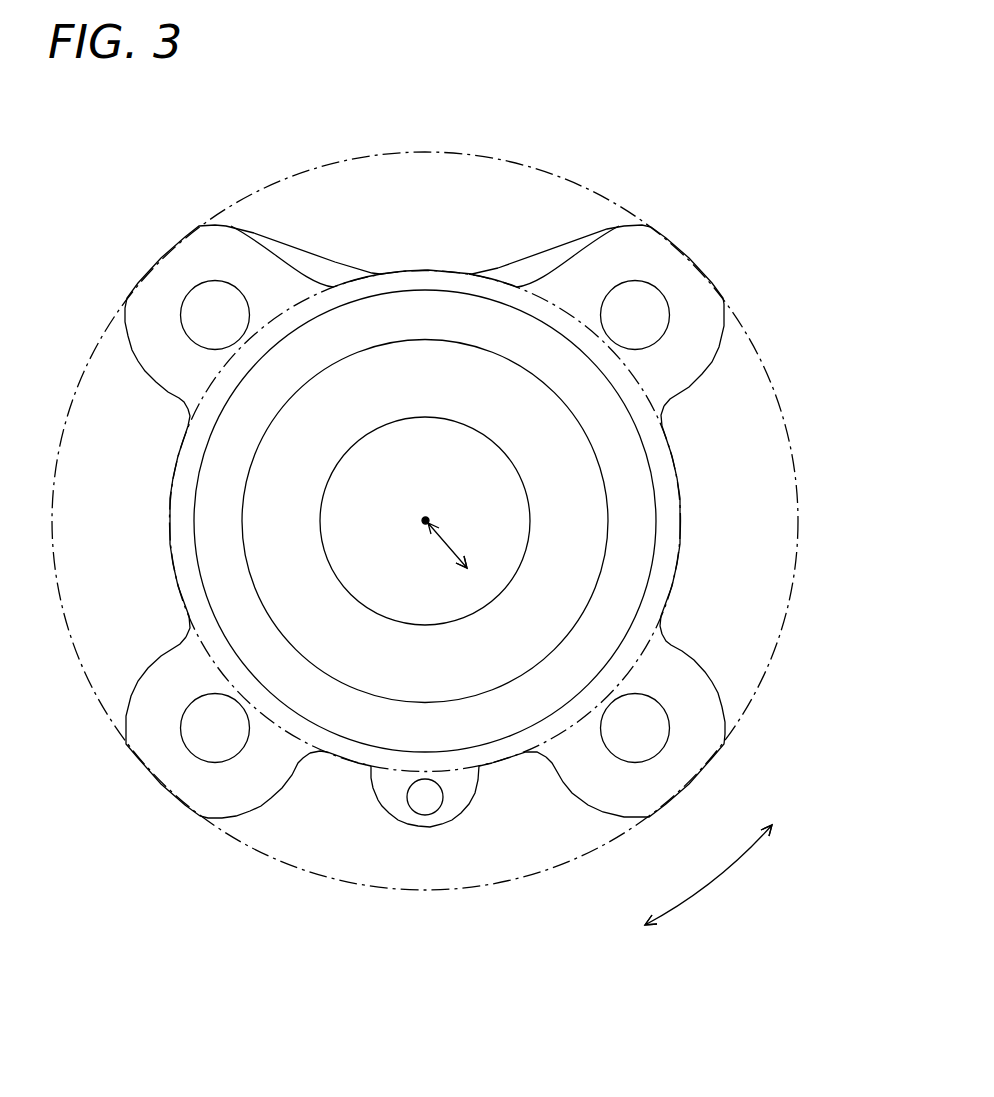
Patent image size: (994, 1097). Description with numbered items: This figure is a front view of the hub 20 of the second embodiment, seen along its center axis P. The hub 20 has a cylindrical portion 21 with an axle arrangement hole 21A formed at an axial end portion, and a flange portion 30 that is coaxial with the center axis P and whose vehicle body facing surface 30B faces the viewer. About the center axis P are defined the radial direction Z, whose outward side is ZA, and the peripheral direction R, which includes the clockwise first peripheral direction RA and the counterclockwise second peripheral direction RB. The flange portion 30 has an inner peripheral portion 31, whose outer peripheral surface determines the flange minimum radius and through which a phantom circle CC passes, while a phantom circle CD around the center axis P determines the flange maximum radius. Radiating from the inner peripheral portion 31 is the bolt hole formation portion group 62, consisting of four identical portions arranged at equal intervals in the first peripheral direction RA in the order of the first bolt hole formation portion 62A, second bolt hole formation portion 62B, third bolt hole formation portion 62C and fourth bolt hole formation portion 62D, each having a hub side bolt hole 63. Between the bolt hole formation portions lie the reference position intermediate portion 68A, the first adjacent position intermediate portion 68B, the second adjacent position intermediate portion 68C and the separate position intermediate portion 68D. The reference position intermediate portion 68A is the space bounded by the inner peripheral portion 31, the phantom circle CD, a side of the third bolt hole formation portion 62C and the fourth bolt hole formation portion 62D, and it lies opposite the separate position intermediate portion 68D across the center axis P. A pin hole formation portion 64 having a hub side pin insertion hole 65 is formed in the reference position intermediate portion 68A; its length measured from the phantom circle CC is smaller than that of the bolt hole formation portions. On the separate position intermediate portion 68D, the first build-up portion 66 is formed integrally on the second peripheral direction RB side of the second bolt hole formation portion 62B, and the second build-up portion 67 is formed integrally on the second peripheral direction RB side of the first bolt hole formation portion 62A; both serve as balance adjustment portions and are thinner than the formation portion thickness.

The hub 20 is at (688, 128).
The cylindrical portion 21 is at (606, 381).
The axle arrangement hole 21A is at (367, 605).
The flange portion 30 is at (640, 228).
The vehicle body facing surface 30B is at (664, 252).
The inner peripheral portion 31 is at (668, 573).
The bolt hole formation portion group 62 is at (774, 316).
The first bolt hole formation portion 62A is at (172, 264).
The second bolt hole formation portion 62B is at (693, 287).
The third bolt hole formation portion 62C is at (705, 729).
The fourth bolt hole formation portion 62D is at (168, 765).
The hub side bolt hole 63 is at (663, 333).
The pin hole formation portion 64 is at (397, 822).
The hub side pin insertion hole 65 is at (436, 809).
The first build-up portion 66 is at (553, 253).
The second build-up portion 67 is at (300, 247).
The reference position intermediate portion 68A is at (494, 765).
The first adjacent position intermediate portion 68B is at (680, 494).
The second adjacent position intermediate portion 68C is at (172, 494).
The separate position intermediate portion 68D is at (425, 270).
The phantom circle CC is at (672, 408).
The phantom circle CD is at (773, 372).
The center axis P is at (425, 520).
The radial direction Z is at (448, 541).
The outward side ZA is at (472, 577).
The peripheral direction R is at (708, 875).
The first peripheral direction RA is at (632, 933).
The second peripheral direction RB is at (782, 816).